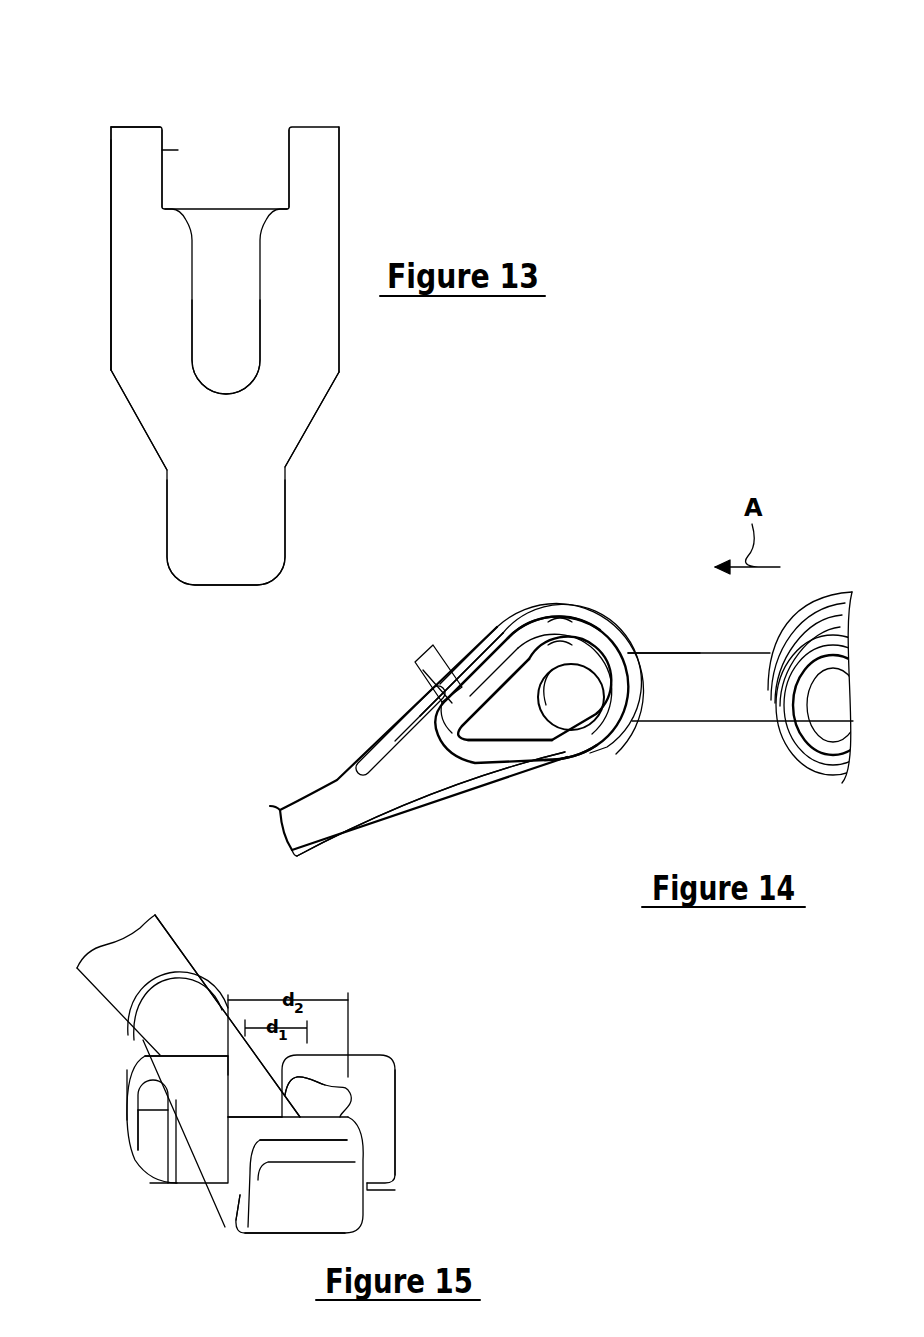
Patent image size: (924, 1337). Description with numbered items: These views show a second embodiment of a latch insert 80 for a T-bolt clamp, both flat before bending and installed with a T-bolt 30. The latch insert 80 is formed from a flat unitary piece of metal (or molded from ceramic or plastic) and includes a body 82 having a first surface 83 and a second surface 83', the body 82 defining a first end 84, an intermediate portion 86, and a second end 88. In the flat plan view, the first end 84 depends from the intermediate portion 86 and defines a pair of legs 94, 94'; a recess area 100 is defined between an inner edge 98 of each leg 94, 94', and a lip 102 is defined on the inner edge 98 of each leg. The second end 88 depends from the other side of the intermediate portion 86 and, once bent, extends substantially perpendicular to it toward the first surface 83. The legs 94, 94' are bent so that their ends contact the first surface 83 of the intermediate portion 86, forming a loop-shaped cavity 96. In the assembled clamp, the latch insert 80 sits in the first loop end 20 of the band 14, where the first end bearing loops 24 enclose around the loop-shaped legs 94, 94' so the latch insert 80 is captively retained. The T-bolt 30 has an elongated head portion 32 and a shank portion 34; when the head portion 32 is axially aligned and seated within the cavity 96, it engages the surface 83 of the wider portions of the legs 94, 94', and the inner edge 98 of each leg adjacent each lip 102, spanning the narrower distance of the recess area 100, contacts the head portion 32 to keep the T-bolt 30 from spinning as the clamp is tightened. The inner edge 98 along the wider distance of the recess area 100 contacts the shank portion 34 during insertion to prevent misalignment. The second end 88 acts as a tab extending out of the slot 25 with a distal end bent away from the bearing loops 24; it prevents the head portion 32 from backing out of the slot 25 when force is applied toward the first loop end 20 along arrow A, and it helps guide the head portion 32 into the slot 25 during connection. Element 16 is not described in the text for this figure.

In FIG. 14, the band 14 is at (388, 817).
In FIG. 14, the handle lower surface 16 is at (457, 797).
In FIG. 14, the first loop end 20 is at (660, 725).
In FIG. 14, the first end bearing loops 24 is at (530, 602).
In FIG. 14, the slot 25 is at (406, 738).
In FIG. 14, the T-bolt 30 is at (698, 655).
In FIG. 15, the T-bolt 30 is at (172, 943).
In FIG. 14, the head portion 32 is at (490, 632).
In FIG. 15, the head portion 32 is at (383, 1125).
In FIG. 14, the shank portion 34 is at (650, 668).
In FIG. 15, the shank portion 34 is at (225, 995).
In FIG. 13, the latch insert 80 is at (380, 84).
In FIG. 14, the latch insert 80 is at (627, 730).
In FIG. 15, the latch insert 80 is at (363, 1053).
In FIG. 14, the body 82 is at (602, 755).
In FIG. 15, the body 82 is at (143, 1150).
In FIG. 13, the first surface 83 is at (86, 255).
In FIG. 14, the first surface 83 is at (480, 742).
In FIG. 15, the first surface 83 is at (243, 1206).
In FIG. 14, the second surface 83' is at (514, 752).
In FIG. 15, the second surface 83' is at (144, 1230).
In FIG. 13, the first end 84 is at (111, 127).
In FIG. 14, the first end 84 is at (495, 617).
In FIG. 15, the first end 84 is at (145, 1056).
In FIG. 13, the intermediate portion 86 is at (283, 417).
In FIG. 14, the intermediate portion 86 is at (612, 758).
In FIG. 15, the intermediate portion 86 is at (180, 1230).
In FIG. 13, the second end 88 is at (172, 571).
In FIG. 14, the second end 88 is at (423, 667).
In FIG. 15, the second end 88 is at (338, 1205).
In FIG. 13, the leg 94 is at (136, 205).
In FIG. 14, the leg 94 is at (554, 589).
In FIG. 15, the leg 94 is at (86, 1106).
In FIG. 13, the leg 94' is at (314, 205).
In FIG. 14, the leg 94' is at (473, 622).
In FIG. 15, the leg 94' is at (447, 1119).
In FIG. 14, the loop-shaped cavity 96 is at (603, 727).
In FIG. 13, the inner edge 98 is at (165, 150).
In FIG. 15, the inner edge 98 is at (165, 1170).
In FIG. 13, the recess area 100 is at (240, 370).
In FIG. 15, the recess area 100 is at (260, 1200).
In FIG. 13, the lip 102 is at (287, 209).